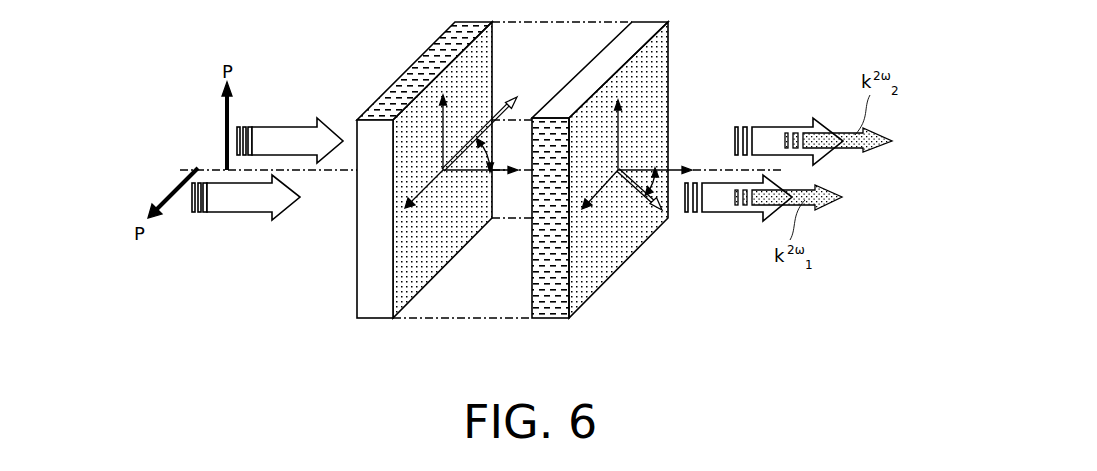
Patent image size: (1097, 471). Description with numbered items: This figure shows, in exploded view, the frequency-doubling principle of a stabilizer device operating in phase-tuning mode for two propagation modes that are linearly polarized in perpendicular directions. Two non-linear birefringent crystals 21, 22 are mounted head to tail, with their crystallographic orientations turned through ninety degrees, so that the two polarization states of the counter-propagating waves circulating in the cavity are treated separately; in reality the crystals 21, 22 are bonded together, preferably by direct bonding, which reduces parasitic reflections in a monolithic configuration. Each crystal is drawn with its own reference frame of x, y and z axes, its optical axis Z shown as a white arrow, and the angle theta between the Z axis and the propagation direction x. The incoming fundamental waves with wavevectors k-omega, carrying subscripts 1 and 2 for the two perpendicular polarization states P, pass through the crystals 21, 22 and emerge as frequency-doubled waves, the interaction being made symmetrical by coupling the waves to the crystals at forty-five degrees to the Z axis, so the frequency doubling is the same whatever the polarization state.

The birefringent crystal 21 is at (413, 72).
The second crystal 22 is at (590, 85).
The fundamental wave k1 1 is at (228, 207).
The fundamental wave k2 2 is at (272, 133).